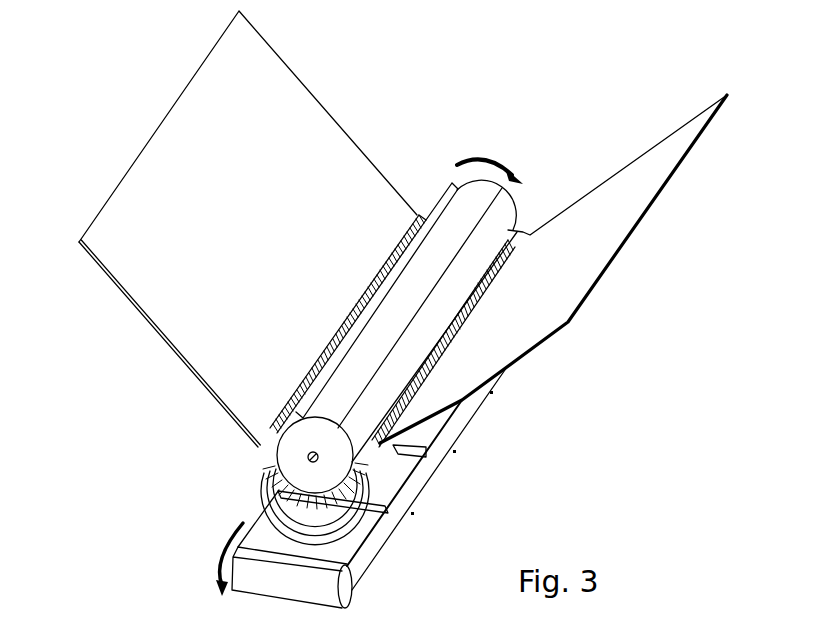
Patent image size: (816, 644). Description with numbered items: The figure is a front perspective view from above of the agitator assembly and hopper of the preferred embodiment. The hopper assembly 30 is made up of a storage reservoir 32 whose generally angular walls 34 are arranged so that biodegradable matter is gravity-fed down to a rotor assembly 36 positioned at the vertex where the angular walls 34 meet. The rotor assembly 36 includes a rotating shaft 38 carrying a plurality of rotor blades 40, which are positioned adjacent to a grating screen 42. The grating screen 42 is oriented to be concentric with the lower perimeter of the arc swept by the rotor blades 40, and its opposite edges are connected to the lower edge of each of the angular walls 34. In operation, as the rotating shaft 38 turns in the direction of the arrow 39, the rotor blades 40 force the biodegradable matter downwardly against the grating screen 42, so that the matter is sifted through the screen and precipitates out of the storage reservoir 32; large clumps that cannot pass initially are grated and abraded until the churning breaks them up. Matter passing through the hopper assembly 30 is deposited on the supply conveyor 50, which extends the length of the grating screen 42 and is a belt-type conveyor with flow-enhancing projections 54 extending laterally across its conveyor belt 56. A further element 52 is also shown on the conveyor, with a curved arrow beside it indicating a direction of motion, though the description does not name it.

The hopper assembly 30 is at (130, 103).
The storage reservoir 32 is at (228, 264).
The angular walls 34 is at (107, 253).
The rotor assembly 36 is at (291, 463).
The rotating shaft 38 is at (372, 418).
The arrow 39 is at (483, 158).
The rotor blades 40 is at (440, 206).
The grating screen 42 is at (325, 512).
The supply conveyor 50 is at (470, 413).
The lower roller 52 is at (222, 552).
The flow-enhancing projections 54 is at (407, 450).
The conveyor belt 56 is at (455, 427).